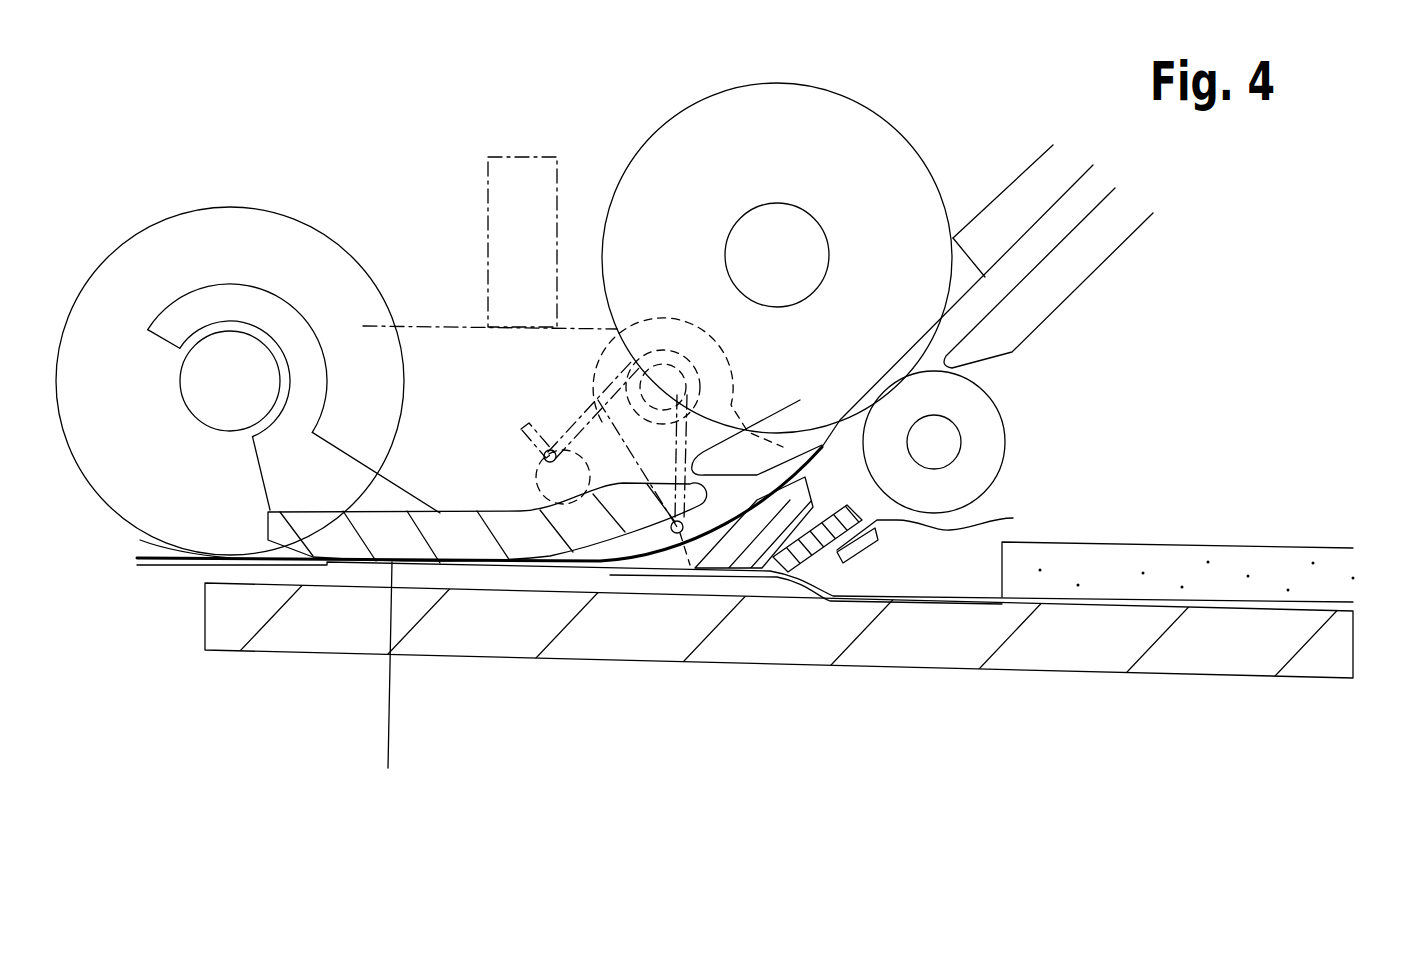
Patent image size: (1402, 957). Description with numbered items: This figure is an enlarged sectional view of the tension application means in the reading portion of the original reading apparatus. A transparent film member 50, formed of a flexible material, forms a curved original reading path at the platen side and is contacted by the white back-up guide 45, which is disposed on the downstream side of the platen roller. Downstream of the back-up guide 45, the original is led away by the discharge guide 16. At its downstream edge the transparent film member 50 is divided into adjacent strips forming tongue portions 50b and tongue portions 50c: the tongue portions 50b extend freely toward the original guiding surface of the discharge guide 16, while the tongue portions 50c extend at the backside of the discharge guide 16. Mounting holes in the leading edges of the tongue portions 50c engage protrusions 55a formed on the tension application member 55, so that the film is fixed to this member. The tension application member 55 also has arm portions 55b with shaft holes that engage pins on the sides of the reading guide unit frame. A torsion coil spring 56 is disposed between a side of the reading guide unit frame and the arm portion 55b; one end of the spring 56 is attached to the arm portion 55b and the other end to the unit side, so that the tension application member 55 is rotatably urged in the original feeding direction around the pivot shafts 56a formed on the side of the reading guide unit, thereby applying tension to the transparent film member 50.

The discharge guide 16 is at (708, 552).
The white back-up guide 45 is at (454, 512).
The transparent film member 50 is at (480, 563).
The tongue portions 50b is at (852, 450).
The tongue portions 50c is at (957, 527).
The tension application member 55 is at (788, 568).
The protrusions 55a is at (848, 528).
The arm portions 55b is at (730, 400).
The torsion coil spring 56 is at (570, 410).
The pivot shafts 56a is at (663, 373).